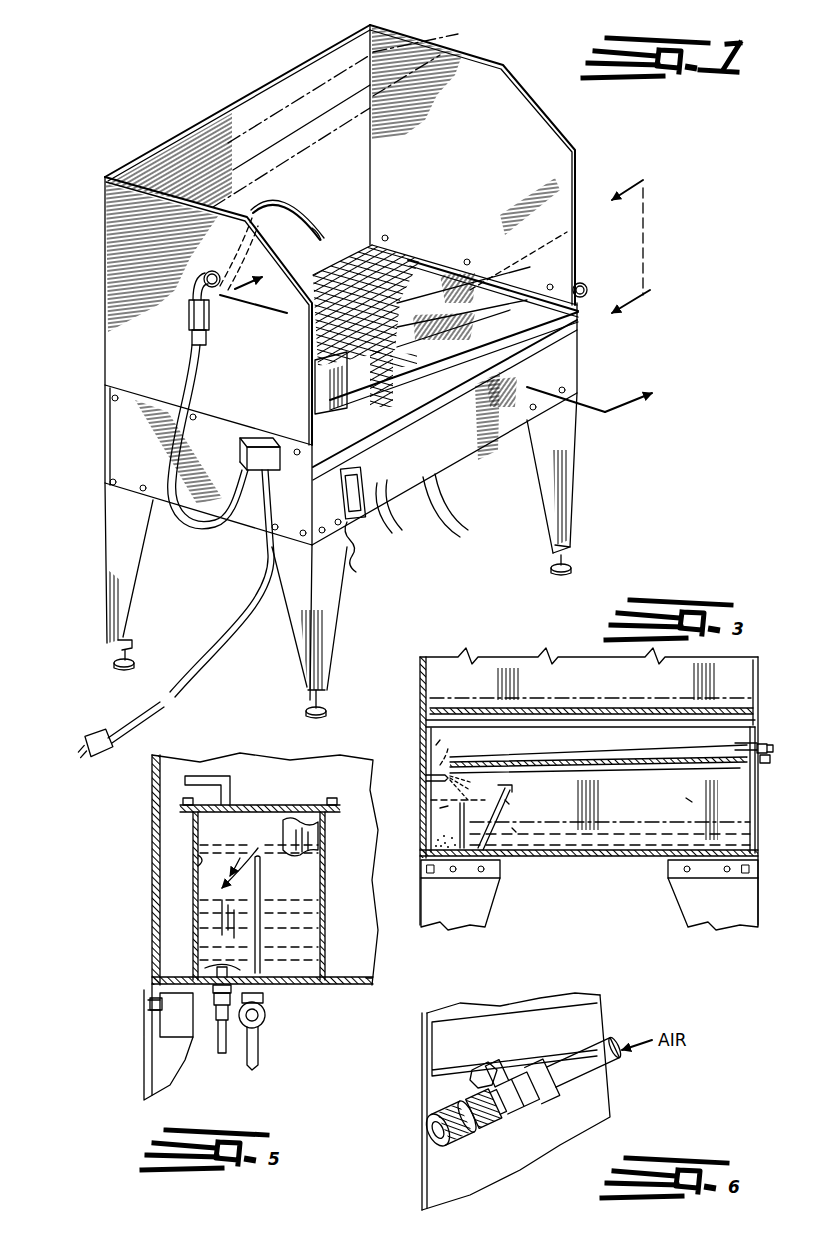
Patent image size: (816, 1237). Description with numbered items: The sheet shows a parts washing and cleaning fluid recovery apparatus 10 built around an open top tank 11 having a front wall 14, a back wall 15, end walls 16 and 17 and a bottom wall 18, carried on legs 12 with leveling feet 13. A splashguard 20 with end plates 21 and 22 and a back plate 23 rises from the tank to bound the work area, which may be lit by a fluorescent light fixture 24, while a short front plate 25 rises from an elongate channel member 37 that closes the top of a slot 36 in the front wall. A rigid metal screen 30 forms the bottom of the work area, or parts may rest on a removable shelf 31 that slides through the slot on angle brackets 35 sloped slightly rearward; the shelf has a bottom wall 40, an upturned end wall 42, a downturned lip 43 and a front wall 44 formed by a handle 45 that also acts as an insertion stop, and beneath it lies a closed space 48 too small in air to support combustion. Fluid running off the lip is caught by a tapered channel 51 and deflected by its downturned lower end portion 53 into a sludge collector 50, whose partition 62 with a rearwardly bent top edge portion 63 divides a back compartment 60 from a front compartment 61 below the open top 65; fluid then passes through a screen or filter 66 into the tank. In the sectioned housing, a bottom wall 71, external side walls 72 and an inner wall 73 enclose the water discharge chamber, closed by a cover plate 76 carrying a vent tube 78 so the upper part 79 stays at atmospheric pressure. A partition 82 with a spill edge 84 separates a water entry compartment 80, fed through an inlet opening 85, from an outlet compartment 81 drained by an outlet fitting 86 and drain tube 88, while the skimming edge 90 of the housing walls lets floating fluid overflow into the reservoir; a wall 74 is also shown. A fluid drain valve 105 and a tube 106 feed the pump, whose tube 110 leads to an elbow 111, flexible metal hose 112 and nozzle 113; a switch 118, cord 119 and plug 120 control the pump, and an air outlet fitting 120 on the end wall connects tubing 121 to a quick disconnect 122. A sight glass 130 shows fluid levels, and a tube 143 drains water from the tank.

In FIG. 1, the parts washing and cleaning fluid recovery apparatus 10 is at (222, 82).
In FIG. 1, the open top tank 11 is at (100, 442).
In FIG. 5, the open top tank 11 is at (146, 792).
In FIG. 1, the legs 12 is at (567, 498).
In FIG. 3, the legs 12 is at (762, 900).
In FIG. 1, the leveling feet 13 is at (572, 570).
In FIG. 1, the front wall 14 is at (468, 455).
In FIG. 3, the front wall 14 is at (757, 828).
In FIG. 3, the back wall 15 is at (420, 732).
In FIG. 1, the end wall 16 is at (108, 406).
In FIG. 1, the end wall 17 is at (522, 306).
In FIG. 3, the end wall 17 is at (752, 796).
In FIG. 6, the end wall 17 is at (535, 1000).
In FIG. 3, the bottom wall 18 is at (602, 858).
In FIG. 5, the bottom wall 18 is at (366, 978).
In FIG. 1, the splashguard 20 is at (325, 44).
In FIG. 1, the end plate 21 is at (104, 322).
In FIG. 1, the end plate 22 is at (522, 82).
In FIG. 1, the back plate 23 is at (288, 74).
In FIG. 1, the fluorescent light fixture 24 is at (312, 168).
In FIG. 1, the front plate 25 is at (330, 412).
In FIG. 3, the front plate 25 is at (762, 670).
In FIG. 1, the rigid metal screen 30 is at (396, 250).
In FIG. 3, the rigid metal screen 30 is at (563, 708).
In FIG. 1, the removable shelf 31 is at (542, 359).
In FIG. 3, the removable shelf 31 is at (776, 746).
In FIG. 3, the angle bracket 35 is at (622, 775).
In FIG. 3, the slot 36 is at (764, 742).
In FIG. 3, the elongate channel member 37 is at (760, 715).
In FIG. 3, the bottom wall 40 is at (615, 757).
In FIG. 3, the end wall 42 is at (567, 757).
In FIG. 3, the downturned lip 43 is at (446, 755).
In FIG. 3, the front wall 44 is at (735, 746).
In FIG. 3, the handle 45 is at (770, 760).
In FIG. 3, the closed space 48 is at (688, 800).
In FIG. 3, the sludge collector 50 is at (512, 828).
In FIG. 3, the tapered channel 51 is at (436, 738).
In FIG. 3, the downturned lower end portion 53 is at (428, 774).
In FIG. 3, the back compartment 60 is at (438, 830).
In FIG. 3, the front compartment 61 is at (498, 856).
In FIG. 3, the partition 62 is at (480, 820).
In FIG. 3, the top edge portion 63 is at (440, 808).
In FIG. 3, the open top 65 is at (510, 786).
In FIG. 3, the screen or filter 66 is at (507, 803).
In FIG. 5, the bottom wall 71 is at (318, 986).
In FIG. 5, the external side walls 72 is at (194, 870).
In FIG. 5, the inner wall 73 is at (312, 845).
In FIG. 5, the wall 74 is at (198, 860).
In FIG. 5, the cover plate 76 is at (318, 775).
In FIG. 5, the vent tube 78 is at (207, 778).
In FIG. 5, the upper part 79 is at (265, 812).
In FIG. 5, the water entry compartment 80 is at (310, 912).
In FIG. 5, the outlet compartment 81 is at (202, 920).
In FIG. 5, the partition 82 is at (283, 984).
In FIG. 5, the spill edge 84 is at (258, 848).
In FIG. 5, the inlet opening 85 is at (322, 957).
In FIG. 5, the outlet fitting 86 is at (212, 962).
In FIG. 1, the drain tube 88 is at (403, 518).
In FIG. 5, the drain tube 88 is at (218, 1050).
In FIG. 5, the skimming edge 90 is at (318, 862).
In FIG. 5, the fluid drain valve 105 is at (266, 1024).
In FIG. 1, the tube 106 is at (369, 548).
In FIG. 5, the tube 106 is at (262, 1068).
In FIG. 1, the tube 110 is at (188, 362).
In FIG. 1, the elbow 111 is at (190, 292).
In FIG. 1, the flexible metal hose 112 is at (291, 207).
In FIG. 1, the nozzle 113 is at (324, 238).
In FIG. 1, the switch 118 is at (245, 457).
In FIG. 1, the cord 119 is at (208, 676).
In FIG. 1, the plug / air outlet fitting 120 is at (88, 733).
In FIG. 6, the plug / air outlet fitting 120 is at (525, 1115).
In FIG. 6, the tubing 121 is at (612, 1078).
In FIG. 6, the quick disconnect 122 is at (458, 1147).
In FIG. 1, the sight glass 130 is at (362, 492).
In FIG. 1, the tube 143 is at (466, 517).